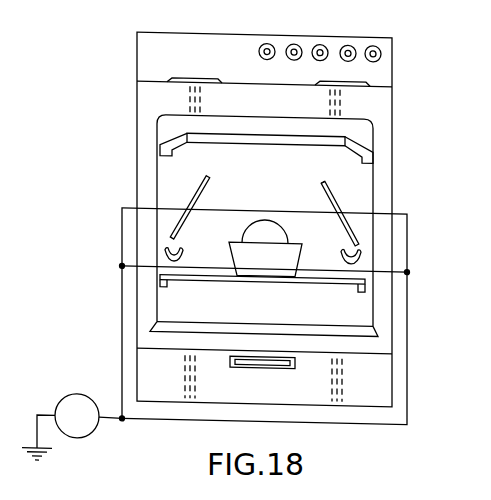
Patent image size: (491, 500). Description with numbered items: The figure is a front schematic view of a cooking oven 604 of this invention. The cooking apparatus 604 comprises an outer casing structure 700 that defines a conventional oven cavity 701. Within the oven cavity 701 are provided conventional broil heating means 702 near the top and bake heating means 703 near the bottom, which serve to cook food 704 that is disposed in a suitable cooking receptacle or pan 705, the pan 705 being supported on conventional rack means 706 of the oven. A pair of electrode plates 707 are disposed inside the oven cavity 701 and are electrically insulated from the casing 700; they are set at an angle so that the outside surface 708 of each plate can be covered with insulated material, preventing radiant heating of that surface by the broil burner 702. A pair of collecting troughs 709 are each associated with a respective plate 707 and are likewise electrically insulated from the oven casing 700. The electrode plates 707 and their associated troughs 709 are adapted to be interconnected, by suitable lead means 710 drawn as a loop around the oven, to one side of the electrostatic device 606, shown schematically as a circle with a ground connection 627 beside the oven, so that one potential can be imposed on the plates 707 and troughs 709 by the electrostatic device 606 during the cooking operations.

The cooking oven 604 is at (410, 52).
The outer casing structure 700 is at (375, 112).
The oven cavity 701 is at (178, 174).
The broil heating means 702 is at (240, 144).
The bake heating means 703 is at (283, 331).
The food 704 is at (277, 231).
The cooking receptacle or pan 705 is at (241, 241).
The rack means 706 is at (229, 284).
The electrode plates 707 is at (209, 193).
The outside surface 708 is at (359, 178).
The collecting troughs 709 is at (186, 257).
The lead means 710 is at (101, 418).
The electrostatic device 606 is at (80, 431).
The ground connection 627 is at (96, 403).